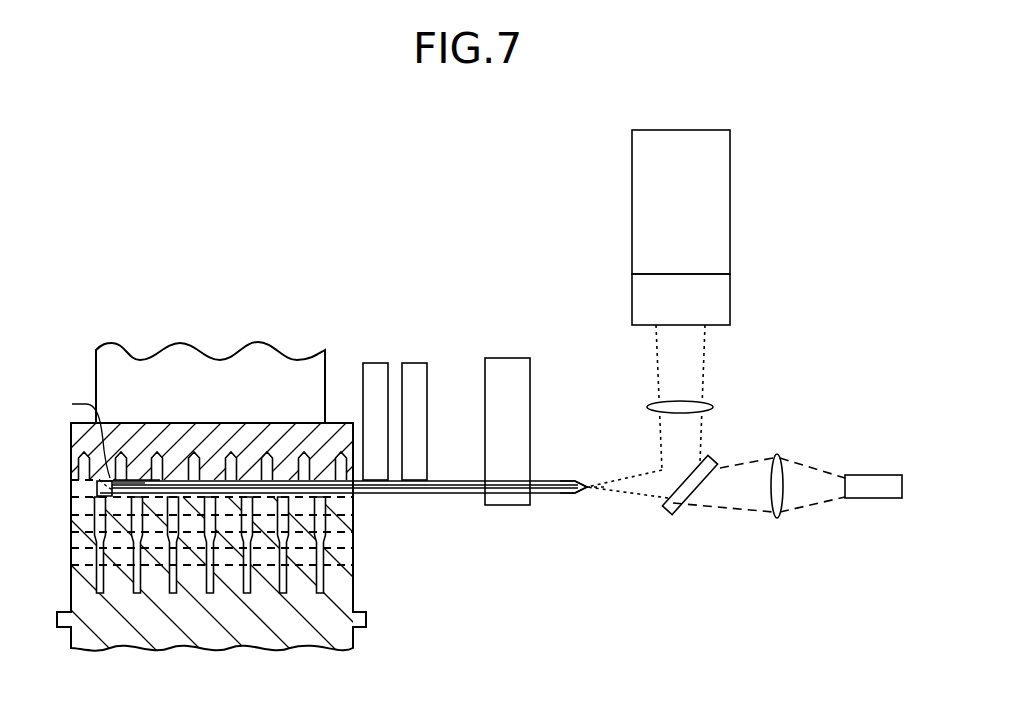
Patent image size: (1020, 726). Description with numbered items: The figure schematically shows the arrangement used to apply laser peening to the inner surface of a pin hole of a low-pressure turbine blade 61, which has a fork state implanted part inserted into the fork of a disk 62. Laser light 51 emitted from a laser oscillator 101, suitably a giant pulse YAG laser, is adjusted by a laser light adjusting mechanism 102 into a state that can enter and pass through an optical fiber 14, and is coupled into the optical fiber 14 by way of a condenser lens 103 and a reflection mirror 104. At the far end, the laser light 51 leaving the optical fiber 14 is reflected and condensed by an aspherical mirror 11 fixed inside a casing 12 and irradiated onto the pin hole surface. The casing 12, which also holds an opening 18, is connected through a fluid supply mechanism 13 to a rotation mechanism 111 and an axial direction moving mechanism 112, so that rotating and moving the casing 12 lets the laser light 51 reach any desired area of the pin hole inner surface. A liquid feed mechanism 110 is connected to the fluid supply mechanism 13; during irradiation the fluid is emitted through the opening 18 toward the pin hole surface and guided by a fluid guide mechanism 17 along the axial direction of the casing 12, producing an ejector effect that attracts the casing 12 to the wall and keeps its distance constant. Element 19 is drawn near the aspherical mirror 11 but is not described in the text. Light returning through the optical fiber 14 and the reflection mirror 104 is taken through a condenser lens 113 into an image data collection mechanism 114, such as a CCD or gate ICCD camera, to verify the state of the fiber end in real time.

The aspherical mirror 11 is at (97, 490).
The casing 12 is at (133, 482).
The fluid supply mechanism 13 is at (430, 494).
The optical fiber 14 is at (560, 494).
The fluid guide mechanism 17 is at (145, 478).
The opening 18 is at (78, 435).
The light path 19 is at (100, 482).
The laser light 51 is at (693, 362).
The low-pressure turbine blade 61 is at (247, 357).
The disk 62 is at (243, 650).
The laser oscillator 101 is at (713, 204).
The laser light adjusting mechanism 102 is at (713, 300).
The condenser lens 103 is at (712, 406).
The reflection mirror 104 is at (676, 512).
The liquid feed mechanism 110 is at (376, 368).
The rotation mechanism 111 is at (412, 368).
The axial direction moving mechanism 112 is at (505, 368).
The condenser lens 113 is at (778, 518).
The image data collection mechanism 114 is at (868, 492).